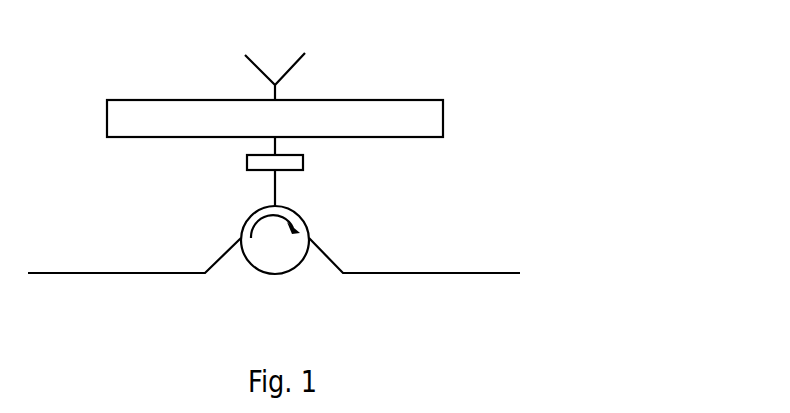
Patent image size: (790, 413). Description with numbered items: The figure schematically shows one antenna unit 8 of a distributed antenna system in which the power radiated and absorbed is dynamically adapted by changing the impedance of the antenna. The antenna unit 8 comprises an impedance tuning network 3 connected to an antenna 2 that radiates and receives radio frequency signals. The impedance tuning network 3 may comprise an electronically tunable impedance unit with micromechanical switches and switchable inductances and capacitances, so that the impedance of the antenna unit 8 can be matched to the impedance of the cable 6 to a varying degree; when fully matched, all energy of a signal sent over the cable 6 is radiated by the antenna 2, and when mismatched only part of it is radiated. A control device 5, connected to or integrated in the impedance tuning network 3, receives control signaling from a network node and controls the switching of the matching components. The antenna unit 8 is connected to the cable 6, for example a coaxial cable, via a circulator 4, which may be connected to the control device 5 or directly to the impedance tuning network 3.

The antenna 2 is at (296, 62).
The impedance tuning network 3 is at (443, 115).
The circulator 4 is at (277, 262).
The control device 5 is at (303, 162).
The cable 6 is at (482, 273).
The antenna unit 8 is at (455, 58).